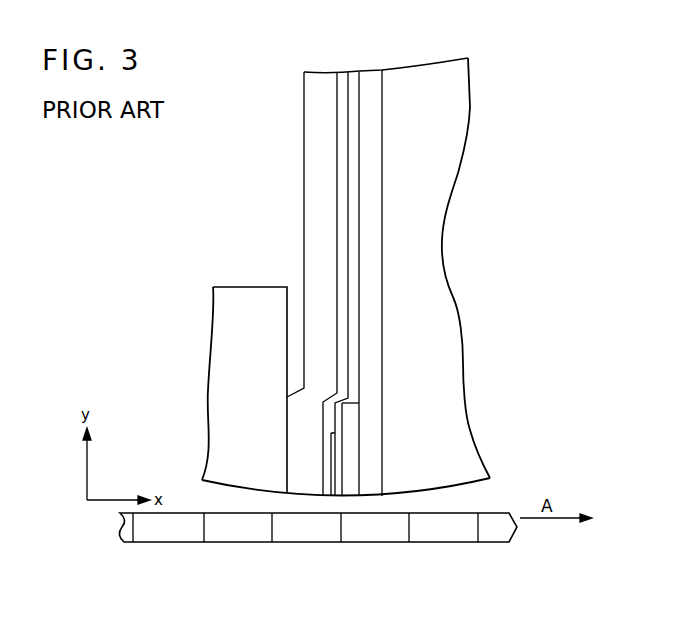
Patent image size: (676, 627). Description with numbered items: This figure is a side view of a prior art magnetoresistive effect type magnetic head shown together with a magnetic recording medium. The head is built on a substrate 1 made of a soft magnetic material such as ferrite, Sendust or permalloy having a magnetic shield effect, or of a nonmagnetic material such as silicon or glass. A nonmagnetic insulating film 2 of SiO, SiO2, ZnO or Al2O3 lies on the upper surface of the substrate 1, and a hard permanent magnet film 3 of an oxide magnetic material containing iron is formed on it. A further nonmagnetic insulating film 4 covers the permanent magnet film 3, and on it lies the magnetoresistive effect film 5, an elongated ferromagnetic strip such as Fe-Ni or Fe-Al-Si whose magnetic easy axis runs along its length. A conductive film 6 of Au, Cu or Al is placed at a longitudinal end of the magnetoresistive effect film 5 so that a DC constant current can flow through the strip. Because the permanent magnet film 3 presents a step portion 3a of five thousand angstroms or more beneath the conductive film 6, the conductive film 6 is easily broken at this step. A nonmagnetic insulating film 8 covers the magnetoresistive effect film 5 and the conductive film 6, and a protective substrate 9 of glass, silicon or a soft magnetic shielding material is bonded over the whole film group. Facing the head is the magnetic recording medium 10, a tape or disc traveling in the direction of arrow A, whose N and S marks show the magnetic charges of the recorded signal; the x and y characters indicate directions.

The substrate 1 is at (455, 118).
The nonmagnetic insulating film 2 is at (373, 180).
The permanent magnet film 3 is at (353, 432).
The step portion 3a is at (348, 406).
The nonmagnetic insulating film 4 is at (356, 218).
The magnetoresistive effect film 5 is at (335, 461).
The conductive film 6 is at (337, 200).
The nonmagnetic insulating film 8 is at (320, 162).
The protective substrate 9 is at (227, 325).
The magnetic recording medium 10 is at (253, 538).